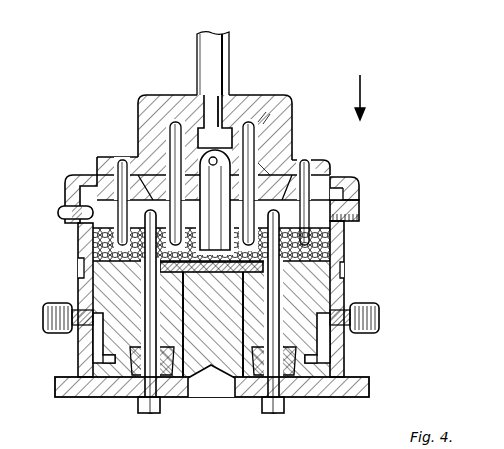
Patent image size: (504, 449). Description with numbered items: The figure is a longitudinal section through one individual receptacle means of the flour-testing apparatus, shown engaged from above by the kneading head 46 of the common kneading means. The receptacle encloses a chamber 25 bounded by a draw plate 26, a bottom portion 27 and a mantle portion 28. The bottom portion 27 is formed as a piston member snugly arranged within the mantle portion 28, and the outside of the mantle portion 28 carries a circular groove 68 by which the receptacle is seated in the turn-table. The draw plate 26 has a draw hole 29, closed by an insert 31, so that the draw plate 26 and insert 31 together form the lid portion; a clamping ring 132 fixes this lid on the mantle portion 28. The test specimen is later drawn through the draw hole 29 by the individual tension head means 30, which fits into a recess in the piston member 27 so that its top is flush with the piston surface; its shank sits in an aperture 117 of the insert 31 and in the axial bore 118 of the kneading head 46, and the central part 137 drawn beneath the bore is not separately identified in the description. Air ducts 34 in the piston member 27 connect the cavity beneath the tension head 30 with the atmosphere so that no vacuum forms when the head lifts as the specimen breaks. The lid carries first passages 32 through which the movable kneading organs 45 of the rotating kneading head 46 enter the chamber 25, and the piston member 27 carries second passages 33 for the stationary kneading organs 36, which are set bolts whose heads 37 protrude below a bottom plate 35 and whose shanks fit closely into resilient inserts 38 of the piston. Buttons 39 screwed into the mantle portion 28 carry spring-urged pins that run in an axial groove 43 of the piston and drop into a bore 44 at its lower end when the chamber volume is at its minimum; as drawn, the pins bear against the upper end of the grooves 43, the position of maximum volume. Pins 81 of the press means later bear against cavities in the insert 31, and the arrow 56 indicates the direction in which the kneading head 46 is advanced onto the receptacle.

The chamber 25 is at (360, 192).
The draw plate 26 is at (97, 174).
The bottom portion 27 is at (344, 288).
The mantle portion 28 is at (78, 288).
The draw hole 29 is at (138, 173).
The individual tension head means 30 is at (347, 250).
The insert 31 is at (329, 167).
The first passages 32 is at (173, 137).
The second passages 33 is at (147, 297).
The air ducts 34 is at (187, 360).
The bottom plate 35 is at (329, 387).
The stationary kneading organs 36 is at (334, 272).
The heads 37 is at (153, 400).
The resilient inserts 38 is at (294, 380).
The buttons 39 is at (380, 308).
The axial groove 43 is at (98, 347).
The bore 44 is at (93, 367).
The movable kneading organs 45 is at (67, 205).
The kneading head 46 is at (160, 110).
The arrow 56 is at (362, 97).
The circular groove 68 is at (78, 272).
The pins 81 is at (233, 398).
The aperture 117 is at (257, 167).
The axial bore 118 is at (232, 135).
The clamping ring 132 is at (360, 208).
The central stem 137 is at (203, 157).